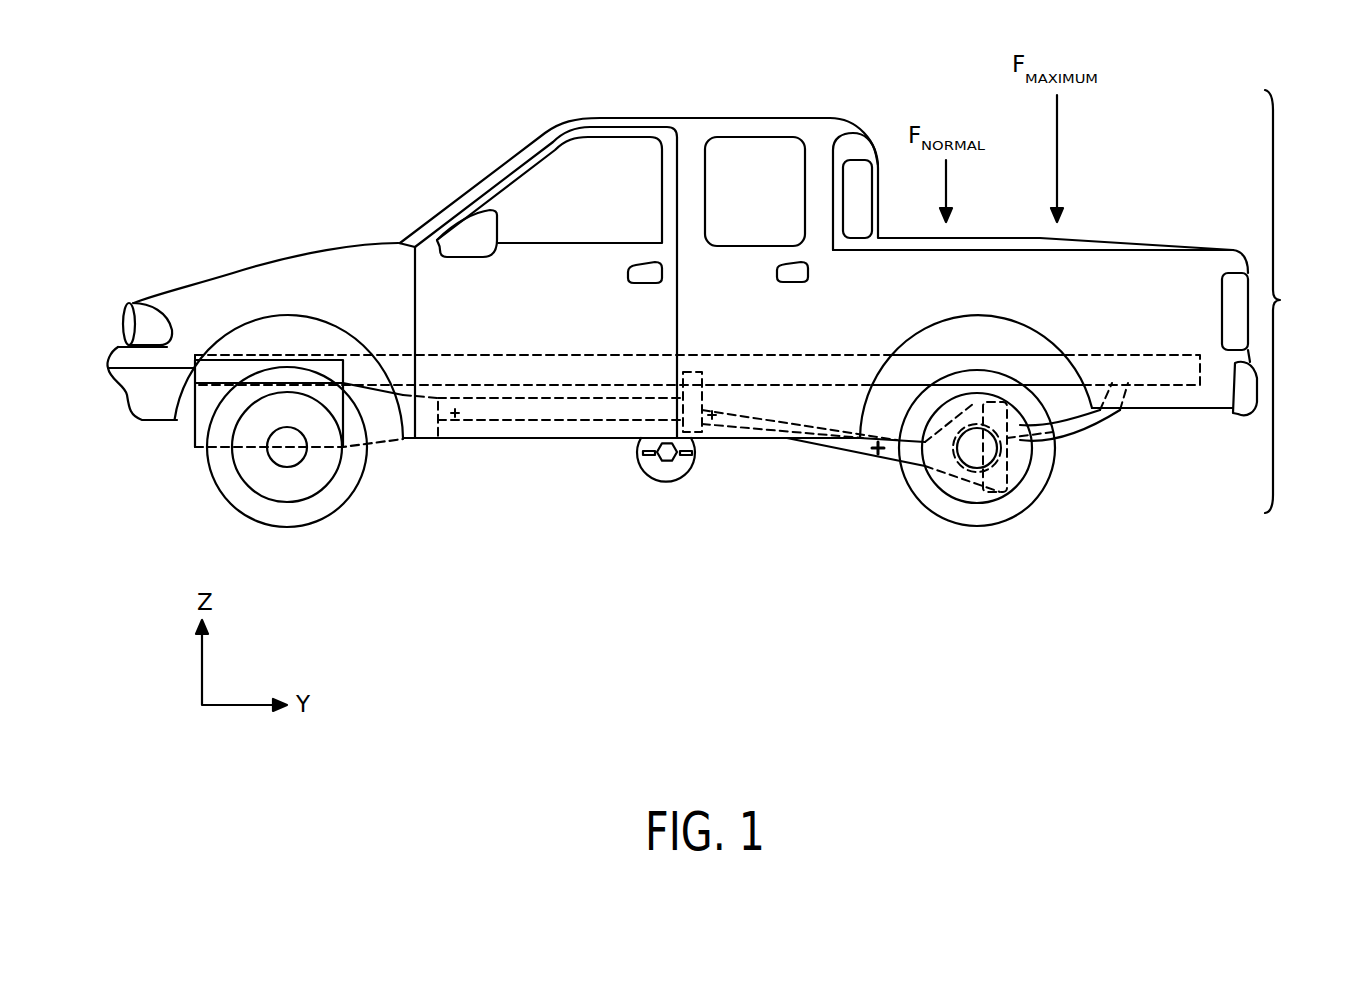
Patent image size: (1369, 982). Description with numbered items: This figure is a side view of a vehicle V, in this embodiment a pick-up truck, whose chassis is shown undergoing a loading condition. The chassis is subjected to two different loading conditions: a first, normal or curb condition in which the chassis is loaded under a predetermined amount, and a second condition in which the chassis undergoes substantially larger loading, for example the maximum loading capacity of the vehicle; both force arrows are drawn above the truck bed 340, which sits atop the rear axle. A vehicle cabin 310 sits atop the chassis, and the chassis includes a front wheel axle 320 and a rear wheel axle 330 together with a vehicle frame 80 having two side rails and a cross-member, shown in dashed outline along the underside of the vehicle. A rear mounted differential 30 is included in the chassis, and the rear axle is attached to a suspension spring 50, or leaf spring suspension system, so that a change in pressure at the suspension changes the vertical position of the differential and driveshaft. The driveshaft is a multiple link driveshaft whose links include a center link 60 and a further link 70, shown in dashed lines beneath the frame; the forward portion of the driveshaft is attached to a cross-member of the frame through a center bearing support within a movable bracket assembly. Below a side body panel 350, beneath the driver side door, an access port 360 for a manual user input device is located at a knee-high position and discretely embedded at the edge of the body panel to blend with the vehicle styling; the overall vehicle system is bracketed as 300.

The vehicle system 300 is at (1296, 301).
The vehicle cabin 310 is at (418, 124).
The front wheel axle 320 is at (285, 467).
The rear wheel axle 330 is at (977, 468).
The truck bed 340 is at (970, 243).
The side body panel 350 is at (1155, 314).
The access port 360 is at (667, 490).
The rear mounted differential 30 is at (1013, 447).
The suspension spring 50 is at (1082, 440).
The center link 60 is at (782, 425).
The link 70 is at (505, 417).
The vehicle frame 80 is at (695, 432).
The vehicle V is at (268, 267).